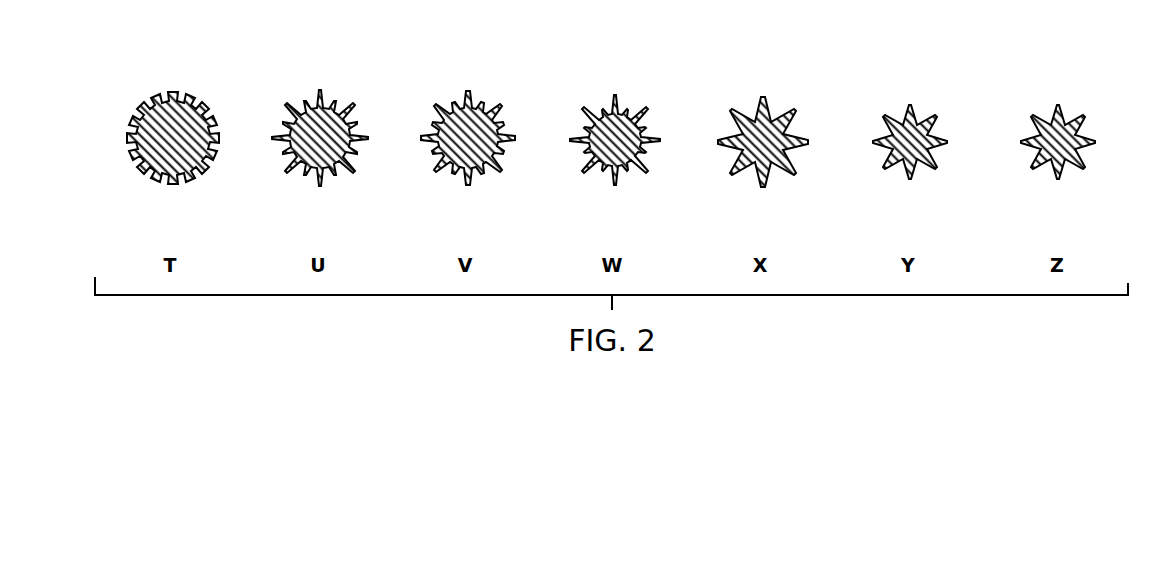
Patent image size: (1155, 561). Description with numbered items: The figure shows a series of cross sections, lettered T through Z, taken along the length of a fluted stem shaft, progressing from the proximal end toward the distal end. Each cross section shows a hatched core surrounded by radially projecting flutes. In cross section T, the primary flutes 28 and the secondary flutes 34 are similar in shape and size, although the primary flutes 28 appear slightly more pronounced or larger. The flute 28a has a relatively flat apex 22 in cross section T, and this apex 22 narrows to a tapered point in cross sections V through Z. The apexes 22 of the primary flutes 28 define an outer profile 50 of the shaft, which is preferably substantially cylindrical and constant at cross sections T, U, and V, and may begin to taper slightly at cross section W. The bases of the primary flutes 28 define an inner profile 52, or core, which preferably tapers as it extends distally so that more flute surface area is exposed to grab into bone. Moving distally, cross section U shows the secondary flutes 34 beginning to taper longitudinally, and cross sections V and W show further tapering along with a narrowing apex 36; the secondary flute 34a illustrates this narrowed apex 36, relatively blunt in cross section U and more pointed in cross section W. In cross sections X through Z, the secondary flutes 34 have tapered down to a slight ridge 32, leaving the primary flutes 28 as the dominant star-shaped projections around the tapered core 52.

The apex 22 is at (171, 90).
The primary flutes 28 is at (172, 185).
The flute 28a is at (175, 90).
The ridge 32 is at (753, 170).
The secondary flutes 34 is at (157, 182).
The secondary flute 34a is at (337, 98).
The apex 36 is at (332, 100).
The outer profile 50 is at (140, 98).
The inner profile 52 is at (193, 100).